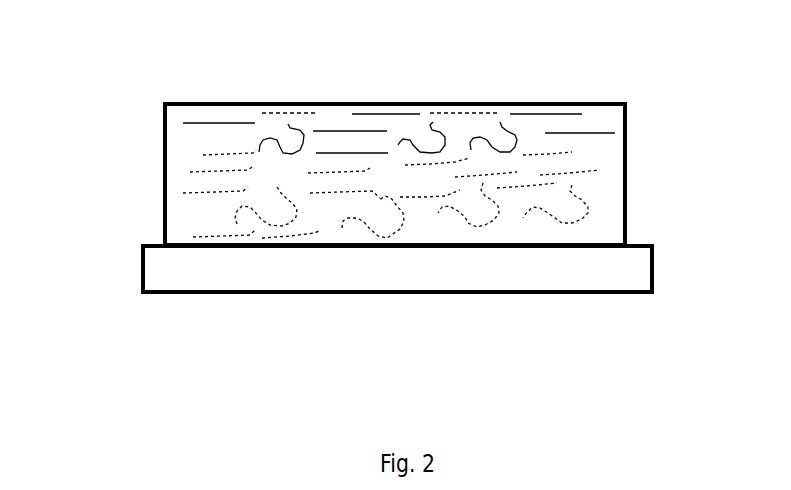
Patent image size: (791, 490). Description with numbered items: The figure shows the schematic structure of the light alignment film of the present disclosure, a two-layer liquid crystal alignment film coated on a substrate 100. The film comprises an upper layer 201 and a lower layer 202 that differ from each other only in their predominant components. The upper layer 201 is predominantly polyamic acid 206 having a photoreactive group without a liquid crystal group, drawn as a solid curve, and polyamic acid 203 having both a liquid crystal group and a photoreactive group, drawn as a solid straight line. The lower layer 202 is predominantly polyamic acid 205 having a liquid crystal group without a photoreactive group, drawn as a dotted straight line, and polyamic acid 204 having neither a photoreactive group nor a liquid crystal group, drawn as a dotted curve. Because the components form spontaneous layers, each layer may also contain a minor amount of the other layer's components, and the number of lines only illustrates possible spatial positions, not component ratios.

The substrate 100 is at (605, 278).
The upper layer 201 is at (632, 107).
The lower layer 202 is at (632, 162).
The polyamic acid having both a liquid crystal group and a photoreactive group 203 is at (378, 115).
The polyamic acid having neither a photoreactive group nor a liquid crystal group 204 is at (397, 231).
The polyamic acid having a liquid crystal group without a photoreactive group 205 is at (283, 114).
The polyamic acid having a photoreactive group without a liquid crystal group 206 is at (503, 123).